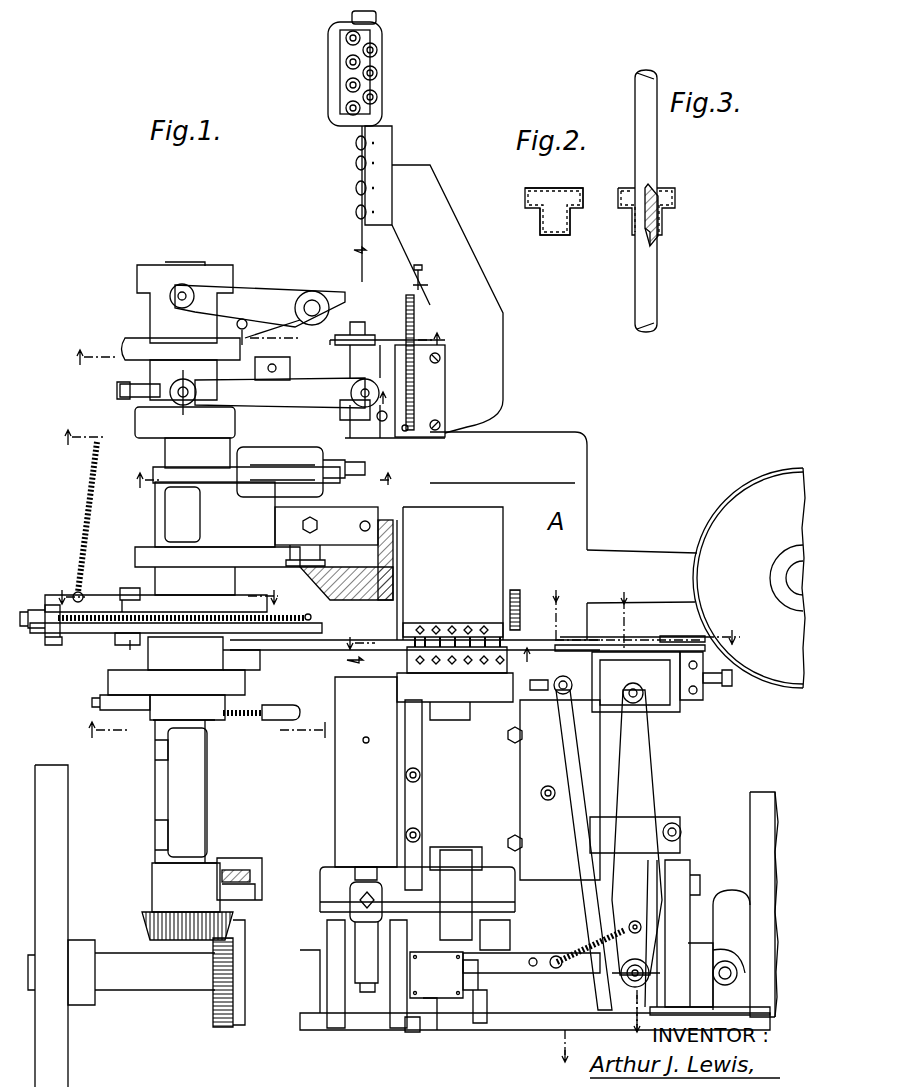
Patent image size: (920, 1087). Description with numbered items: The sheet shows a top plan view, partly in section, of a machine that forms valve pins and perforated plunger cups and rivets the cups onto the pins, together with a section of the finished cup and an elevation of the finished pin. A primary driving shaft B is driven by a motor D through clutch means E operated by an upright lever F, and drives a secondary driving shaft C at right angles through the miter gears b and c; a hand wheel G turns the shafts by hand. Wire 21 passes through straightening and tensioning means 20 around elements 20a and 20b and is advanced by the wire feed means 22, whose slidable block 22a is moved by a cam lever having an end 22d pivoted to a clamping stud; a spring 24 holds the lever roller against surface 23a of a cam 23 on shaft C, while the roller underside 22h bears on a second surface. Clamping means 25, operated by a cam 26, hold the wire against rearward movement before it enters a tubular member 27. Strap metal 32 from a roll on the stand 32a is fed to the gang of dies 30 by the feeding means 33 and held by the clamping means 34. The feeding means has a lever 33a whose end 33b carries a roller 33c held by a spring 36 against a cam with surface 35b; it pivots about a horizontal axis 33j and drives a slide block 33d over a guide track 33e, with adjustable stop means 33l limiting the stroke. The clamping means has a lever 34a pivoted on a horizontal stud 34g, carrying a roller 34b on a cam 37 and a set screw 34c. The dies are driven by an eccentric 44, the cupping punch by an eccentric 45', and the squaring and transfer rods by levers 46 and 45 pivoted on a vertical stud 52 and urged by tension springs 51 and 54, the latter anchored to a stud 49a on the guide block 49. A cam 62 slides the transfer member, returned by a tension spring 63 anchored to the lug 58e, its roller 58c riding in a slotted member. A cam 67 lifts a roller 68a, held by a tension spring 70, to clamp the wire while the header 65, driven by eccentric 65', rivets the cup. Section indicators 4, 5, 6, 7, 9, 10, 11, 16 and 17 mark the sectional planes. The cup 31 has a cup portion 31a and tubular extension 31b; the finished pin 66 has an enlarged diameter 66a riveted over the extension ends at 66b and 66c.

In FIG. 1, the wire straightening and tensioning means 20 is at (350, 118).
In FIG. 1, the straightening and tensioning element 20a is at (377, 73).
In FIG. 1, the straightening and tensioning element 20b is at (357, 176).
In FIG. 1, the wire 21 is at (359, 240).
In FIG. 1, the section line 4 is at (349, 459).
In FIG. 1, the pivoted lever 45 is at (257, 305).
In FIG. 1, the vertical stud 52 is at (312, 300).
In FIG. 1, the tension spring 51 is at (255, 331).
In FIG. 1, the pivoted lever 46 is at (286, 335).
In FIG. 1, the tension spring 54 is at (407, 312).
In FIG. 1, the underside of roller 22h is at (274, 360).
In FIG. 1, the section line 9 is at (252, 349).
In FIG. 1, the cam surface 23a is at (148, 423).
In FIG. 1, the wire feed means 22 is at (280, 393).
In FIG. 1, the lever end 22d is at (372, 392).
In FIG. 1, the cam 23 is at (185, 422).
In FIG. 1, the section line 10 is at (226, 421).
In FIG. 1, the guide block 49 is at (428, 383).
In FIG. 1, the stud 49a is at (410, 428).
In FIG. 1, the slidable block 22a is at (342, 412).
In FIG. 1, the secondary driving shaft C is at (170, 453).
In FIG. 1, the cam 26 is at (196, 474).
In FIG. 1, the clamping means 25 is at (230, 477).
In FIG. 1, the section line 7 is at (262, 482).
In FIG. 1, the tubular member 27 is at (360, 556).
In FIG. 1, the cam 62 is at (185, 603).
In FIG. 1, the spring 24 is at (92, 516).
In FIG. 1, the roller 58c is at (119, 602).
In FIG. 1, the section line 6 is at (168, 590).
In FIG. 1, the tension spring 63 is at (116, 630).
In FIG. 1, the upright lug 58e is at (52, 640).
In FIG. 1, the cam 67 is at (184, 678).
In FIG. 1, the roller 68a is at (112, 685).
In FIG. 1, the tension spring 70 is at (252, 720).
In FIG. 1, the section line 5 is at (389, 692).
In FIG. 1, the hand wheel G is at (62, 1050).
In FIG. 1, the primary driving shaft B is at (172, 990).
In FIG. 1, the miter gear c is at (150, 935).
In FIG. 1, the miter gear b is at (220, 1022).
In FIG. 1, the upright lever F is at (252, 876).
In FIG. 1, the stand 32a is at (749, 578).
In FIG. 1, the strap metal 32 is at (682, 636).
In FIG. 1, the slide block 33d is at (640, 646).
In FIG. 1, the section line 11 is at (550, 639).
In FIG. 1, the section line 17 is at (563, 824).
In FIG. 1, the section line 16 is at (632, 808).
In FIG. 1, the gang of dies 30 is at (470, 640).
In FIG. 1, the header 65 is at (378, 775).
In FIG. 1, the strap metal clamping means 34 is at (580, 740).
In FIG. 1, the set screw 34c is at (553, 690).
In FIG. 1, the horizontal stud 34g is at (531, 792).
In FIG. 1, the lever 34a is at (603, 958).
In FIG. 1, the roller 34b is at (590, 955).
In FIG. 1, the roller 33c is at (682, 710).
In FIG. 1, the guide track 33e is at (684, 690).
In FIG. 1, the adjustable stop means 33l is at (724, 680).
In FIG. 1, the strap metal feeding means 33 is at (641, 742).
In FIG. 1, the horizontal axis 33j is at (681, 832).
In FIG. 1, the lever 33a is at (640, 872).
In FIG. 1, the cam surface 35b is at (648, 990).
In FIG. 1, the clutch means E is at (680, 926).
In FIG. 1, the motor D is at (714, 904).
In FIG. 1, the lever end 33b is at (720, 983).
In FIG. 1, the cam 37 is at (620, 1012).
In FIG. 1, the eccentric 65' is at (367, 969).
In FIG. 1, the eccentric 44 is at (452, 1015).
In FIG. 1, the eccentric 45' is at (419, 1045).
In FIG. 1, the spring 36 is at (581, 975).
In FIG. 2, the cup-shaped element 31 is at (543, 211).
In FIG. 2, the cup portion 31a is at (525, 194).
In FIG. 2, the tubular extension 31b is at (570, 226).
In FIG. 3, the pin 66 is at (654, 172).
In FIG. 3, the riveted portion 66b is at (667, 197).
In FIG. 3, the enlarged diameter 66a is at (660, 224).
In FIG. 3, the riveted portion 66c is at (654, 236).